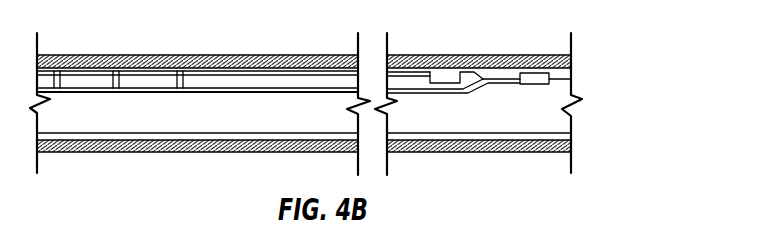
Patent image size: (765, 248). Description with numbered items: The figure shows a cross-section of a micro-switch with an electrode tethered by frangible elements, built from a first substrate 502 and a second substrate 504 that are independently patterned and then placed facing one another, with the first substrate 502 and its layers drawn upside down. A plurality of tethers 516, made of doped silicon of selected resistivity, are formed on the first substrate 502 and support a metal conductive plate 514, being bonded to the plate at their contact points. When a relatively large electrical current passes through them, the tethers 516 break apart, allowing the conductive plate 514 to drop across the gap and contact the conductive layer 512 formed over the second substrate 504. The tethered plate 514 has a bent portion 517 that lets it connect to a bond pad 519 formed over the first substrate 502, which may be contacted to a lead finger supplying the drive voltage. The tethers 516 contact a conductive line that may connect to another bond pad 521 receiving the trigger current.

The first substrate 502 is at (572, 63).
The second substrate 504 is at (571, 146).
The conductive layer 512 is at (571, 132).
The conductive plate 514 is at (60, 94).
The tethers 516 is at (70, 60).
The bent portion 517 is at (474, 92).
The bond pad 519 is at (540, 84).
The bond pad 521 is at (445, 78).